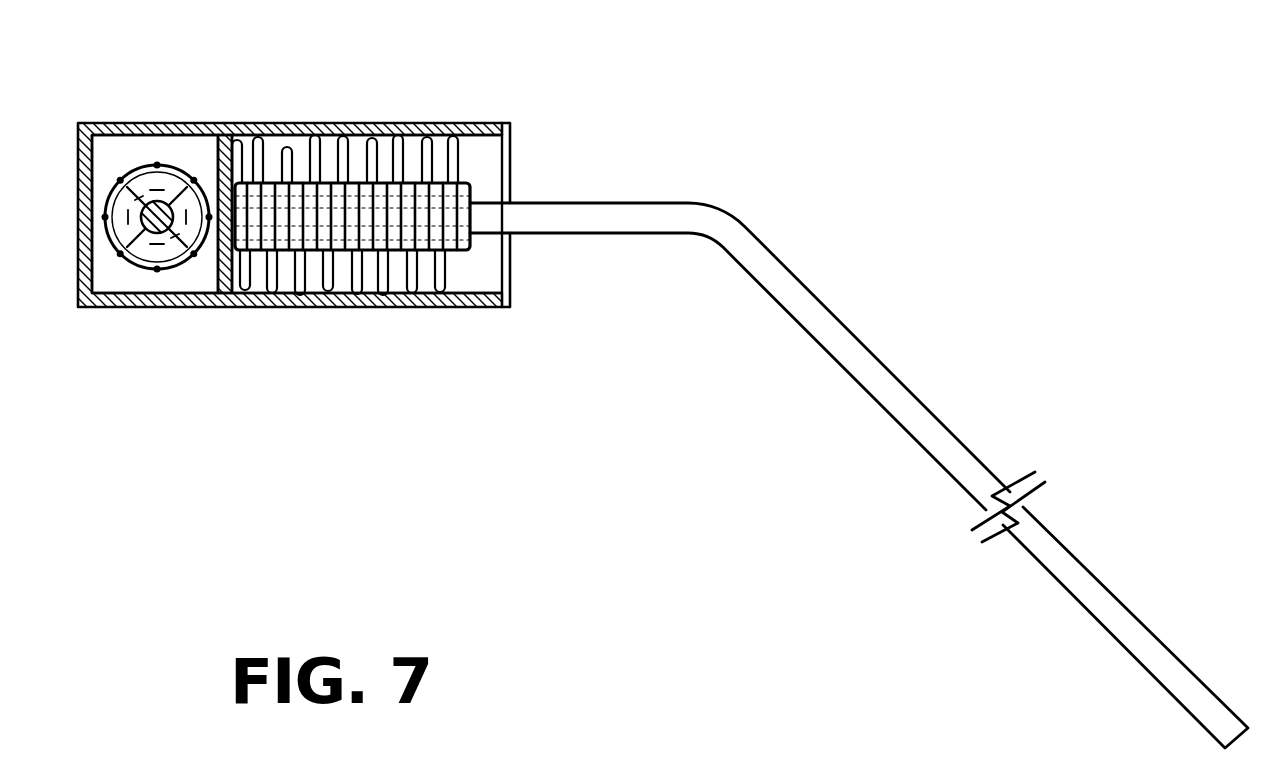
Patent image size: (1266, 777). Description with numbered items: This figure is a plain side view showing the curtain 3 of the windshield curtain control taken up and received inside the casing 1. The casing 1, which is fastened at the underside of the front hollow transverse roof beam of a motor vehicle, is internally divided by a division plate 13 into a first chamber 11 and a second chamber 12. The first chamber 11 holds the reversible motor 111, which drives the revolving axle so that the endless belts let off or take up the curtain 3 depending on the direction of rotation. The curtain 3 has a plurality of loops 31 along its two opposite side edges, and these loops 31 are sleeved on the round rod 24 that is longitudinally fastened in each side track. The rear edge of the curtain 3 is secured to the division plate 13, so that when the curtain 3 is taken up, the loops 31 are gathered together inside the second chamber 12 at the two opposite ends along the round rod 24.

The casing 1 is at (250, 128).
The first chamber 11 is at (126, 280).
The second chamber 12 is at (483, 277).
The division plate 13 is at (230, 264).
The reversible motor 111 is at (144, 178).
The curtain 3 is at (468, 170).
The loops 31 is at (472, 195).
The round rod 24 is at (787, 275).